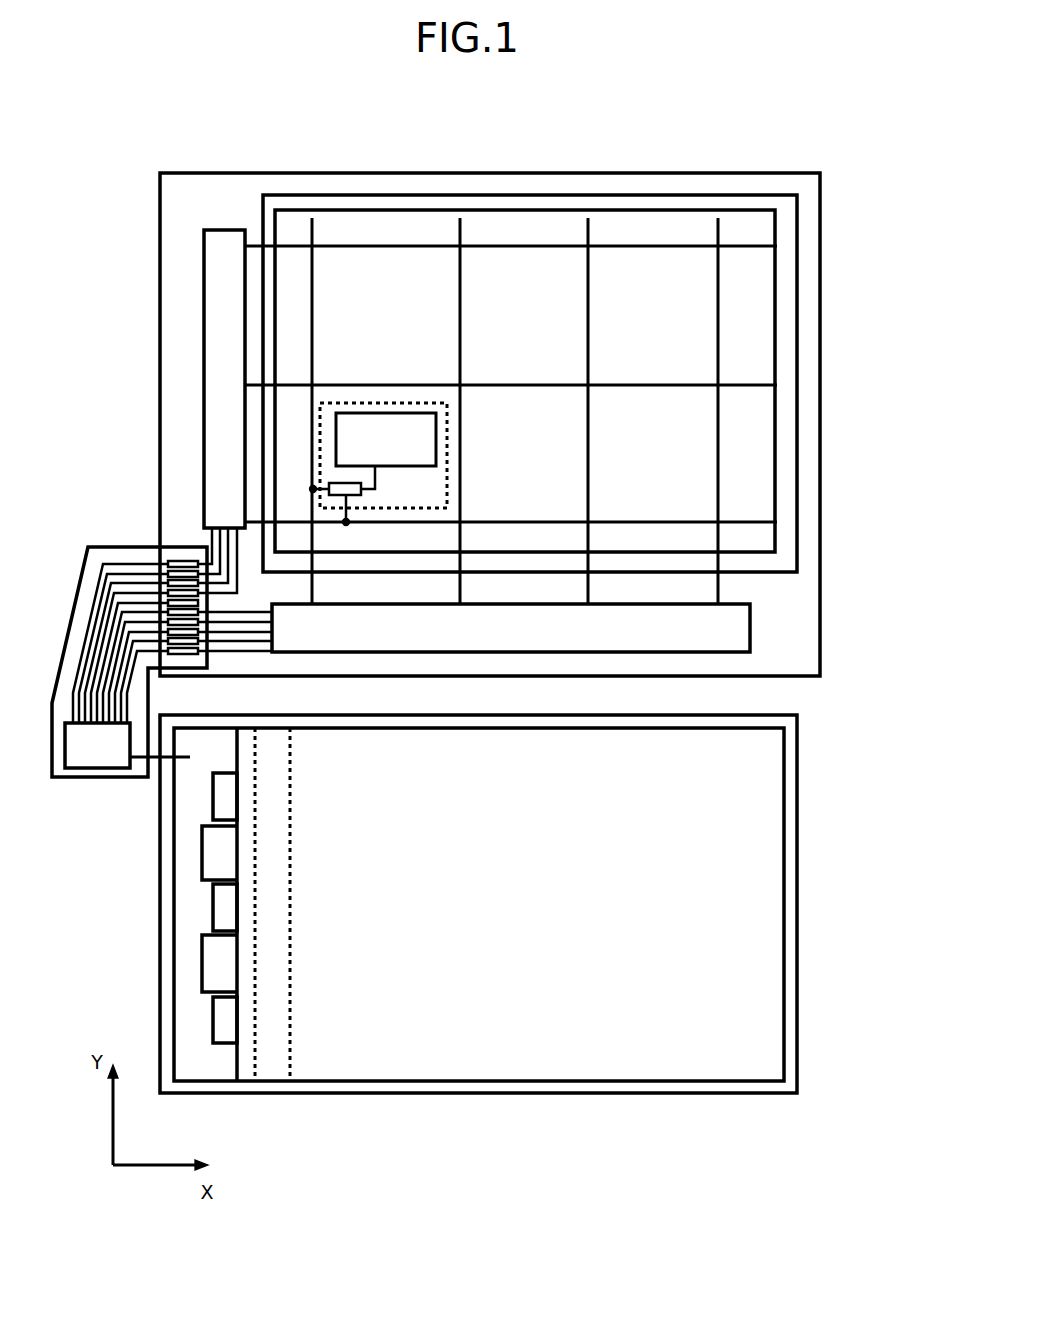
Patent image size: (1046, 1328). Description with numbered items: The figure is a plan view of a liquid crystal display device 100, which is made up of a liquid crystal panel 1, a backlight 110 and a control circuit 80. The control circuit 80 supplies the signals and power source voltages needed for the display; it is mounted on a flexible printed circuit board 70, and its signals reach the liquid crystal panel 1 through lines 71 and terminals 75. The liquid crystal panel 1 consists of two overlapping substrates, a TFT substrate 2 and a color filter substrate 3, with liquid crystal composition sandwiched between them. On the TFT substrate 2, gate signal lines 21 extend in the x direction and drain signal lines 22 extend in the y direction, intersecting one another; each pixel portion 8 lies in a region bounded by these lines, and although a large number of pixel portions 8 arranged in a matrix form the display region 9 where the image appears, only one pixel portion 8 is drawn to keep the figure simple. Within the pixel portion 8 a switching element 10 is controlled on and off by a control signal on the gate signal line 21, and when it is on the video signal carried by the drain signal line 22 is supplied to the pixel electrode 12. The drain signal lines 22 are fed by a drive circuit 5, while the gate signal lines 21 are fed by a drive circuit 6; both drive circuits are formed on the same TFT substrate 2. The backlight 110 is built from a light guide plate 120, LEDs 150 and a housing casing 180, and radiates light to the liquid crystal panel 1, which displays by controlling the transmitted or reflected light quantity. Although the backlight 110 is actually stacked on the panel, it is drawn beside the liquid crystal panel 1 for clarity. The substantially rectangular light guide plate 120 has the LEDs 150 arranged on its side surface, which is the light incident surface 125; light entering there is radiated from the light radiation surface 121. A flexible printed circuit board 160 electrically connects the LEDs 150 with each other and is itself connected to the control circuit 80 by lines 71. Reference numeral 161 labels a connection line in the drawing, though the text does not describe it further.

The liquid crystal panel 1 is at (510, 170).
The TFT substrate 2 is at (273, 180).
The color filter substrate 3 is at (333, 198).
The drive circuit 5 is at (750, 626).
The drive circuit 6 is at (210, 230).
The pixel portion 8 is at (448, 427).
The display region 9 is at (630, 222).
The switching element 10 is at (362, 492).
The pixel electrode 12 is at (396, 443).
The gate signal line 21 is at (512, 383).
The drain signal line 22 is at (314, 332).
The flexible printed circuit board 70 is at (120, 552).
The lines 71 is at (100, 563).
The terminals 75 is at (183, 562).
The control circuit 80 is at (88, 757).
The liquid crystal display device 100 is at (450, 1120).
The backlight 110 is at (547, 1103).
The light guide plate 120 is at (380, 1082).
The light radiation surface 121 is at (622, 935).
The light incident surface 125 is at (237, 907).
The LED 150 is at (212, 1017).
The flexible printed circuit board 160 is at (192, 913).
The connection wiring 161 is at (158, 763).
The housing casing 180 is at (313, 1095).